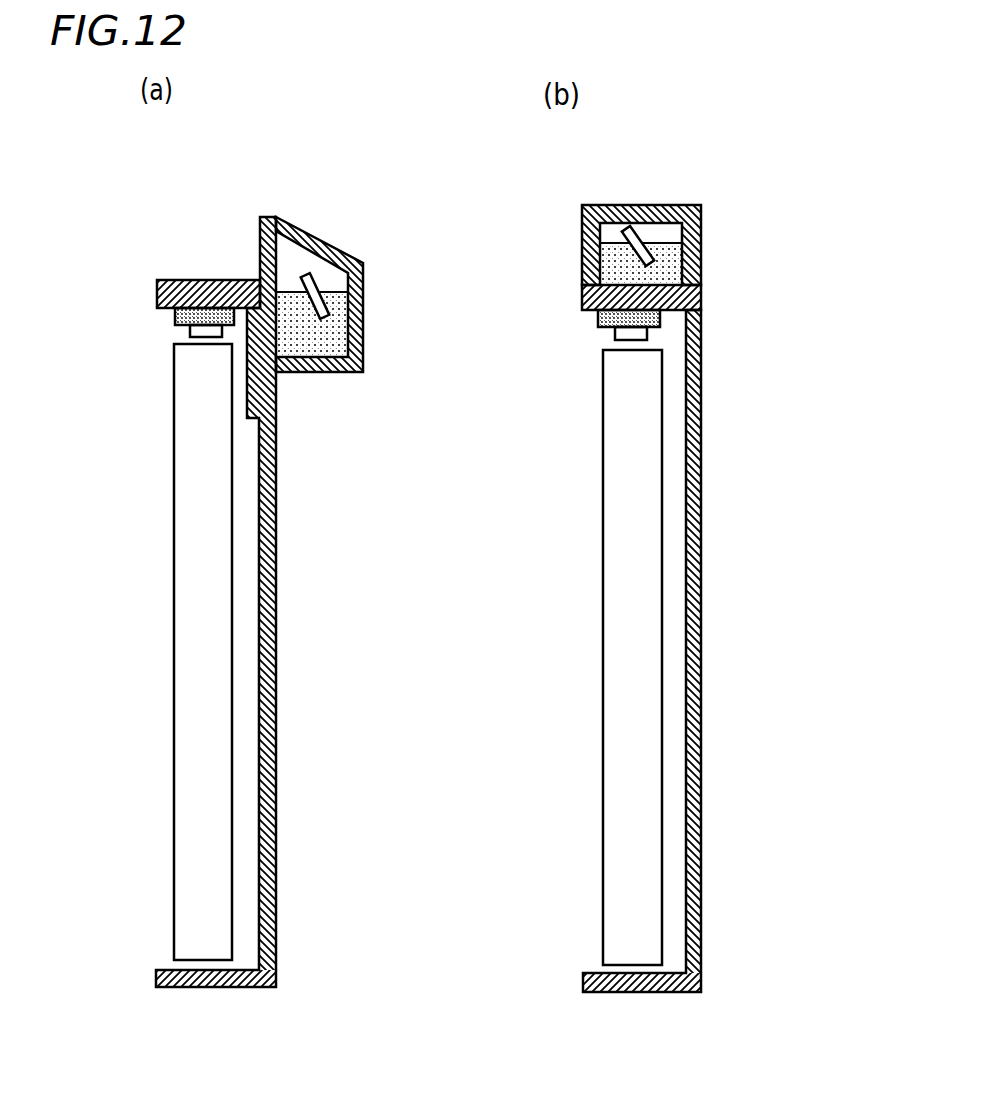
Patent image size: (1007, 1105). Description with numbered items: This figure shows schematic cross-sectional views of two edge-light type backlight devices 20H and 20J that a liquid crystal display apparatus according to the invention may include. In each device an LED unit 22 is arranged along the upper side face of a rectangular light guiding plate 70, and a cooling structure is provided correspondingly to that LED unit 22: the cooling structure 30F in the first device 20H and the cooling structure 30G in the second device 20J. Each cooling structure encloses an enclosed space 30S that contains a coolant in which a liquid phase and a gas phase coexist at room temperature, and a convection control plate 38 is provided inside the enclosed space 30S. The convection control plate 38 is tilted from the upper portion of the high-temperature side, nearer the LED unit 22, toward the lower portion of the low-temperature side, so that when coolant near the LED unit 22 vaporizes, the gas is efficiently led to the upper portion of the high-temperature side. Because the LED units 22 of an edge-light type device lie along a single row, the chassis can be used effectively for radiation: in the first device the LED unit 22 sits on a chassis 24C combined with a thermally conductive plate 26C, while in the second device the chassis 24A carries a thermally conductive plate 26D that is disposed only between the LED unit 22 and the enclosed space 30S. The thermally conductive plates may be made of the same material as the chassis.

The backlight device 20H is at (316, 174).
The backlight device 20J is at (748, 167).
The cooling structure 30F is at (325, 245).
The cooling structure 30G is at (652, 204).
The enclosed space 30S is at (330, 296).
The convection control plate 38 is at (327, 291).
The thermally conductive plate 26C is at (158, 305).
The thermally conductive plate 26D is at (582, 310).
The LED unit 22 is at (166, 334).
The light guiding plate 70 is at (173, 673).
The chassis 24C is at (261, 990).
The chassis 24A is at (686, 995).